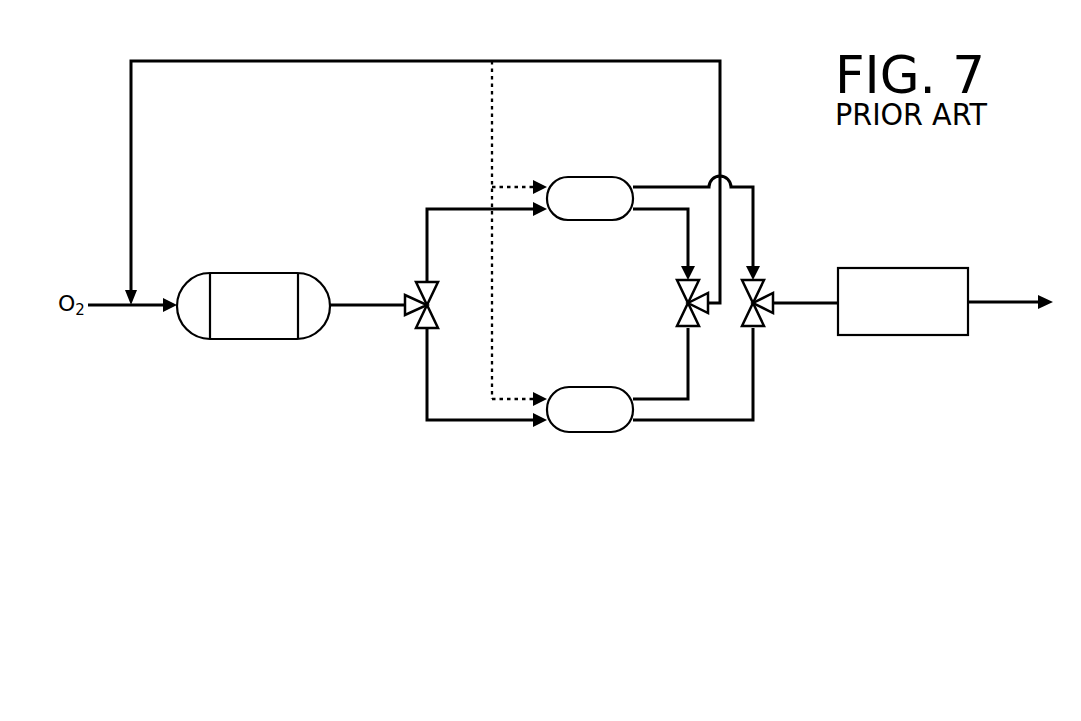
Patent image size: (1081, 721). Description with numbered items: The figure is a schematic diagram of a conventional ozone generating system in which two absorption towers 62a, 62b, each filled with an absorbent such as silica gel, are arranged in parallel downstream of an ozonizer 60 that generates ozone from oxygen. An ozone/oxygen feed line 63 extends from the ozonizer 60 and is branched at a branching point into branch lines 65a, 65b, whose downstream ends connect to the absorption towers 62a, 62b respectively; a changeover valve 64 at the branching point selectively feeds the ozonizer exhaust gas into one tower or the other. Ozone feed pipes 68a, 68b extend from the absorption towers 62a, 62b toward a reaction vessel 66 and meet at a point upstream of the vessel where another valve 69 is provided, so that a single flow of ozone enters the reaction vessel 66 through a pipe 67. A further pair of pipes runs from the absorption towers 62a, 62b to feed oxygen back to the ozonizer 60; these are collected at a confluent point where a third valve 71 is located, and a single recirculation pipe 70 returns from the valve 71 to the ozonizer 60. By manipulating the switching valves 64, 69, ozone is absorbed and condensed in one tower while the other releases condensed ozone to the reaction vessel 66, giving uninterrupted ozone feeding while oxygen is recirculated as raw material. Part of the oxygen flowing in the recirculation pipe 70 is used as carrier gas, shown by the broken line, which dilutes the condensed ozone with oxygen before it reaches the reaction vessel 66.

The ozonizer 60 is at (260, 243).
The absorption tower 62a is at (618, 148).
The absorption tower 62b is at (590, 432).
The ozone/oxygen feed line 63 is at (355, 308).
The changeover valve 64 is at (432, 281).
The branch line 65a is at (437, 207).
The branch line 65b is at (437, 422).
The reaction vessel 66 is at (907, 250).
The pipe 67 is at (803, 300).
The ozone feed pipe 68a is at (780, 160).
The ozone feed pipe 68b is at (733, 422).
The valve 69 is at (778, 313).
The recirculation pipe 70 is at (466, 32).
The third valve 71 is at (712, 310).